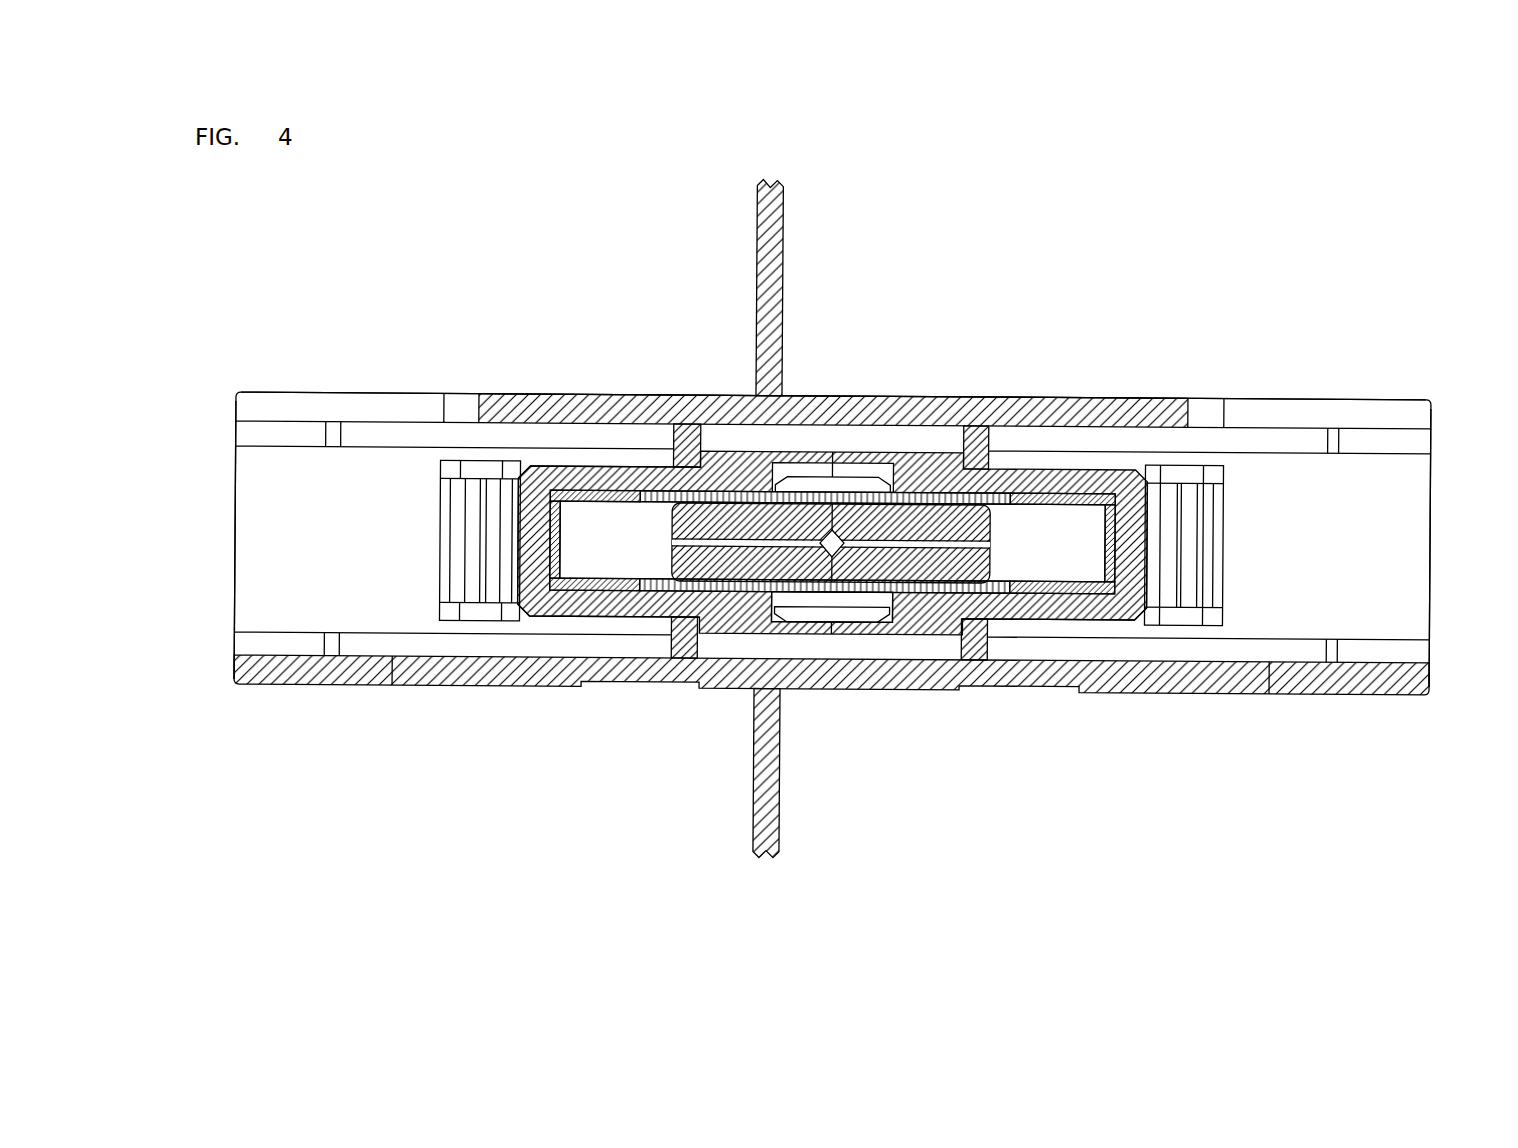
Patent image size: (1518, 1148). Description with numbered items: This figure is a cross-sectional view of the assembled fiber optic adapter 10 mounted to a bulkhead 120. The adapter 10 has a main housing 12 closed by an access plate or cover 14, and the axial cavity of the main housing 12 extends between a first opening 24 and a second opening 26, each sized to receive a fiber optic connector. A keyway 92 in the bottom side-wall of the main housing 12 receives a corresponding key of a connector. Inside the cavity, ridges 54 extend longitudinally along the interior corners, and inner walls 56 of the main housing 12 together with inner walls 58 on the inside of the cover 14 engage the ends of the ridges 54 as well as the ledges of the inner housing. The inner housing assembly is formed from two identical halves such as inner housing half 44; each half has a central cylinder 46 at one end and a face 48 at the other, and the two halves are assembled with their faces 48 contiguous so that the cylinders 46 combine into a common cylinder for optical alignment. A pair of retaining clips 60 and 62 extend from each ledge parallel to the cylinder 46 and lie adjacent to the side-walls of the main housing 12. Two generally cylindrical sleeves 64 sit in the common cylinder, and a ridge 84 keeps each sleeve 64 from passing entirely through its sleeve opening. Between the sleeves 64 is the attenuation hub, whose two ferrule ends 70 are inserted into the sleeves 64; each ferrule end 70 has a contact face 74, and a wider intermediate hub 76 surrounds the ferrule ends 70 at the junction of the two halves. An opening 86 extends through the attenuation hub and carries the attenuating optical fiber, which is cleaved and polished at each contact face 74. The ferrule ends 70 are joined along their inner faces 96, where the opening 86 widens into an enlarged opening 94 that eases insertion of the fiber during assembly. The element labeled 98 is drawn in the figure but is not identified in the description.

The adapter 10 is at (714, 332).
The main housing 12 is at (255, 564).
The cover 14 is at (1227, 677).
The first opening 24 is at (217, 487).
The second opening 26 is at (1441, 511).
The inner housing half 44 is at (560, 609).
The central cylinder 46 is at (1105, 608).
The face 48 is at (829, 612).
The ridges 54 is at (1310, 442).
The inner walls 56 is at (685, 430).
The inner walls 58 is at (682, 632).
The retaining clip 60 is at (480, 469).
The retaining clip 62 is at (1185, 475).
The sleeves 64 is at (624, 561).
The ferrule ends 70 is at (790, 525).
The contact face 74 is at (672, 559).
The intermediate hub 76 is at (838, 553).
The ridge 84 is at (540, 492).
The opening 86 is at (752, 538).
The keyway 92 is at (296, 414).
The opening 94 is at (838, 549).
The ferrule inner faces 96 is at (831, 552).
The lower pocket 98 is at (780, 617).
The bulkhead 120 is at (783, 250).